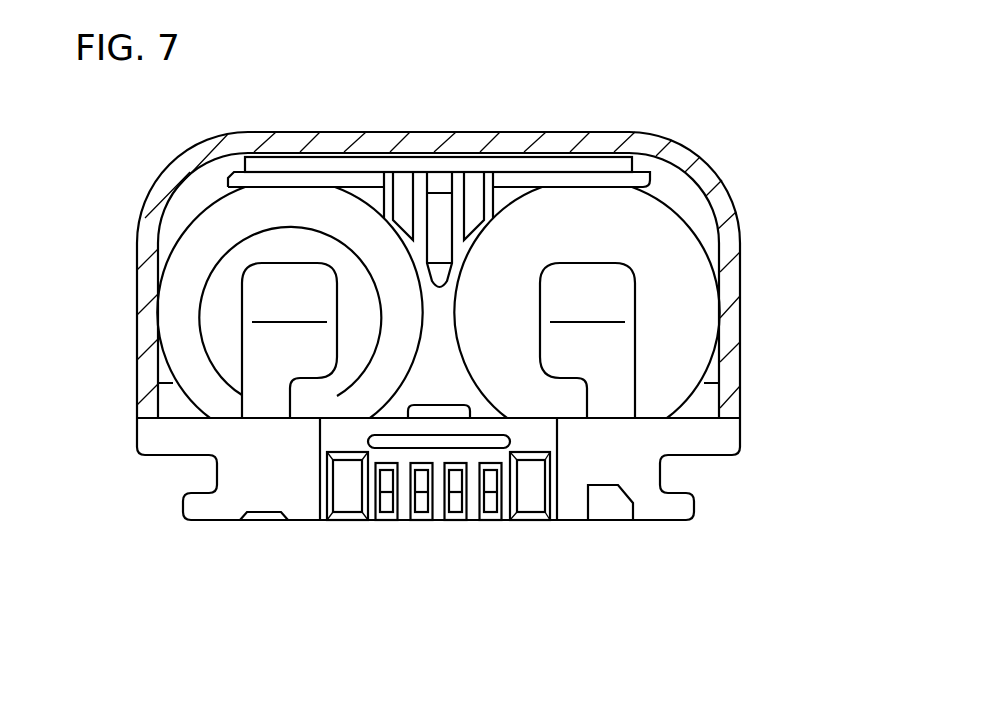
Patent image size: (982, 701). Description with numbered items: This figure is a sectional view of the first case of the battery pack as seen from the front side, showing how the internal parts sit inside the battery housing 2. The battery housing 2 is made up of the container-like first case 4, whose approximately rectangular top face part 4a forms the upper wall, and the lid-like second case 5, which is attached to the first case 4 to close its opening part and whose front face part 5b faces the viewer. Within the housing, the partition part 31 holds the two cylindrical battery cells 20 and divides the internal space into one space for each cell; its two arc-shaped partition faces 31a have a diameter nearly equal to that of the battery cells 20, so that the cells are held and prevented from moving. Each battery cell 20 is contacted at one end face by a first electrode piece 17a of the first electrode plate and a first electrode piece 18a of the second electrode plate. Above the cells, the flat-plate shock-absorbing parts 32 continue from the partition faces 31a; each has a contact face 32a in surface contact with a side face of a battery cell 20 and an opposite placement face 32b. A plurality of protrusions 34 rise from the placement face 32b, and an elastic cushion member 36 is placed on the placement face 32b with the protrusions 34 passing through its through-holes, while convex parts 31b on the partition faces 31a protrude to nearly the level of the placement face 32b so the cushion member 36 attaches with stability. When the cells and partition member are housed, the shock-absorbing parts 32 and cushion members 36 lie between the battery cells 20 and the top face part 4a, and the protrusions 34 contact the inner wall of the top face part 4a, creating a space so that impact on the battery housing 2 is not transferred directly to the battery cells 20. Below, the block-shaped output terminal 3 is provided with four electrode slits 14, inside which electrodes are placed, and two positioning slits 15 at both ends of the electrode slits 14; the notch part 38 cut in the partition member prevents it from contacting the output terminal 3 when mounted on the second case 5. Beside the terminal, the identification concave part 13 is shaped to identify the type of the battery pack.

The battery housing 2 is at (486, 323).
The output terminal 3 is at (438, 512).
The first case 4 is at (471, 249).
The top face part 4a is at (345, 131).
The second case 5 is at (471, 506).
The front face part 5b is at (642, 462).
The identification concave part 13 is at (613, 521).
The electrode slits 14 is at (425, 521).
The positioning slits 15 is at (346, 521).
The first electrode piece 17a is at (260, 342).
The first electrode piece 18a is at (608, 342).
The battery cells 20 is at (185, 272).
The partition part 31 is at (438, 344).
The partition faces 31a is at (385, 350).
The convex parts 31b is at (418, 178).
The shock-absorbing parts 32 is at (437, 176).
The contact face 32a is at (230, 180).
The placement face 32b is at (247, 137).
The protrusions 34 is at (288, 131).
The cushion member 36 is at (512, 162).
The notch part 38 is at (437, 387).